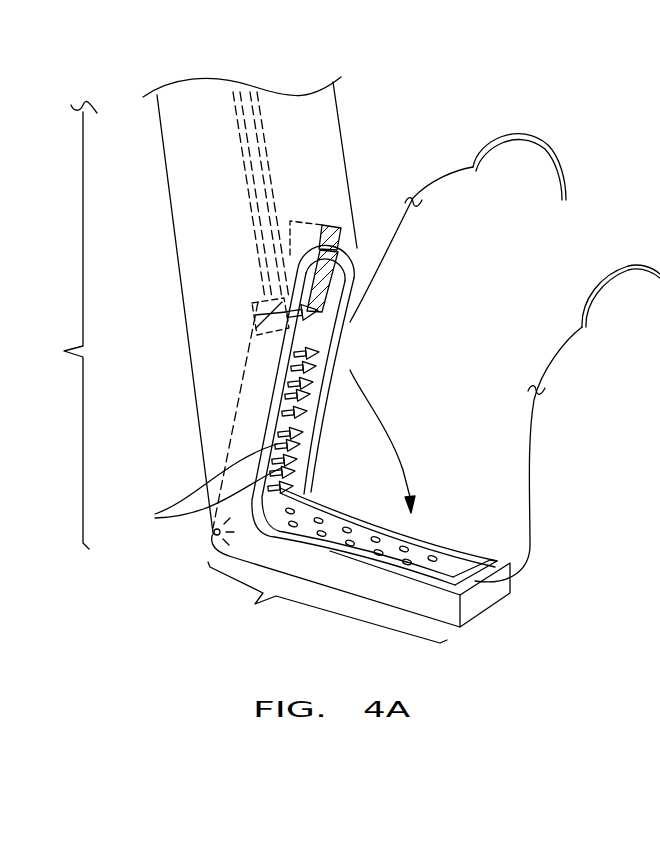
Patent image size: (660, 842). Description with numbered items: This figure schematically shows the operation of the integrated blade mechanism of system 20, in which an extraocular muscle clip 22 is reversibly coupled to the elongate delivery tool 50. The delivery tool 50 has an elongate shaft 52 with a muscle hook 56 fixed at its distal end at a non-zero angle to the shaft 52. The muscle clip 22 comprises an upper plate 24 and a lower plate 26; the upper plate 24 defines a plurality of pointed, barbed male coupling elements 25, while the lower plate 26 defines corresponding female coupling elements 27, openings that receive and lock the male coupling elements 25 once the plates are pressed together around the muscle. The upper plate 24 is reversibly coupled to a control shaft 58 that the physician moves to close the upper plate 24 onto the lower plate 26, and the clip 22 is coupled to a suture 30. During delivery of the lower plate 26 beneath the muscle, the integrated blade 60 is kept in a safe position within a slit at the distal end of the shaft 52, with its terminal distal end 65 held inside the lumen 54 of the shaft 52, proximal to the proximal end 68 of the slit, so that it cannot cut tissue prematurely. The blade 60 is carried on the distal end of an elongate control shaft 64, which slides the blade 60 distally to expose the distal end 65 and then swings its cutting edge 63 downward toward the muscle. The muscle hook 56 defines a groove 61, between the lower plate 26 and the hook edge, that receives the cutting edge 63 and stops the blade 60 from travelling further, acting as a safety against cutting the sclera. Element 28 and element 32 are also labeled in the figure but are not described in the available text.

The system 20 is at (294, 58).
The extraocular muscle clip 22 is at (359, 583).
The upper plate 24 is at (258, 373).
The male coupling elements 25 is at (200, 487).
The lower plate 26 is at (514, 562).
The female coupling elements 27 is at (436, 557).
The pivot 28 is at (213, 532).
The suture 30 is at (392, 234).
The seam 32 is at (508, 143).
The delivery tool 50 is at (64, 325).
The elongate shaft 52 is at (181, 288).
The lumen 54 is at (221, 173).
The muscle hook 56 is at (327, 602).
The control shaft 58 is at (253, 223).
The integrated blade 60 is at (294, 260).
The groove 61 is at (348, 505).
The cutting edge 63 is at (322, 283).
The control shaft 64 is at (257, 120).
The distal end 65 is at (333, 230).
The proximal end of the slit 68 is at (340, 258).